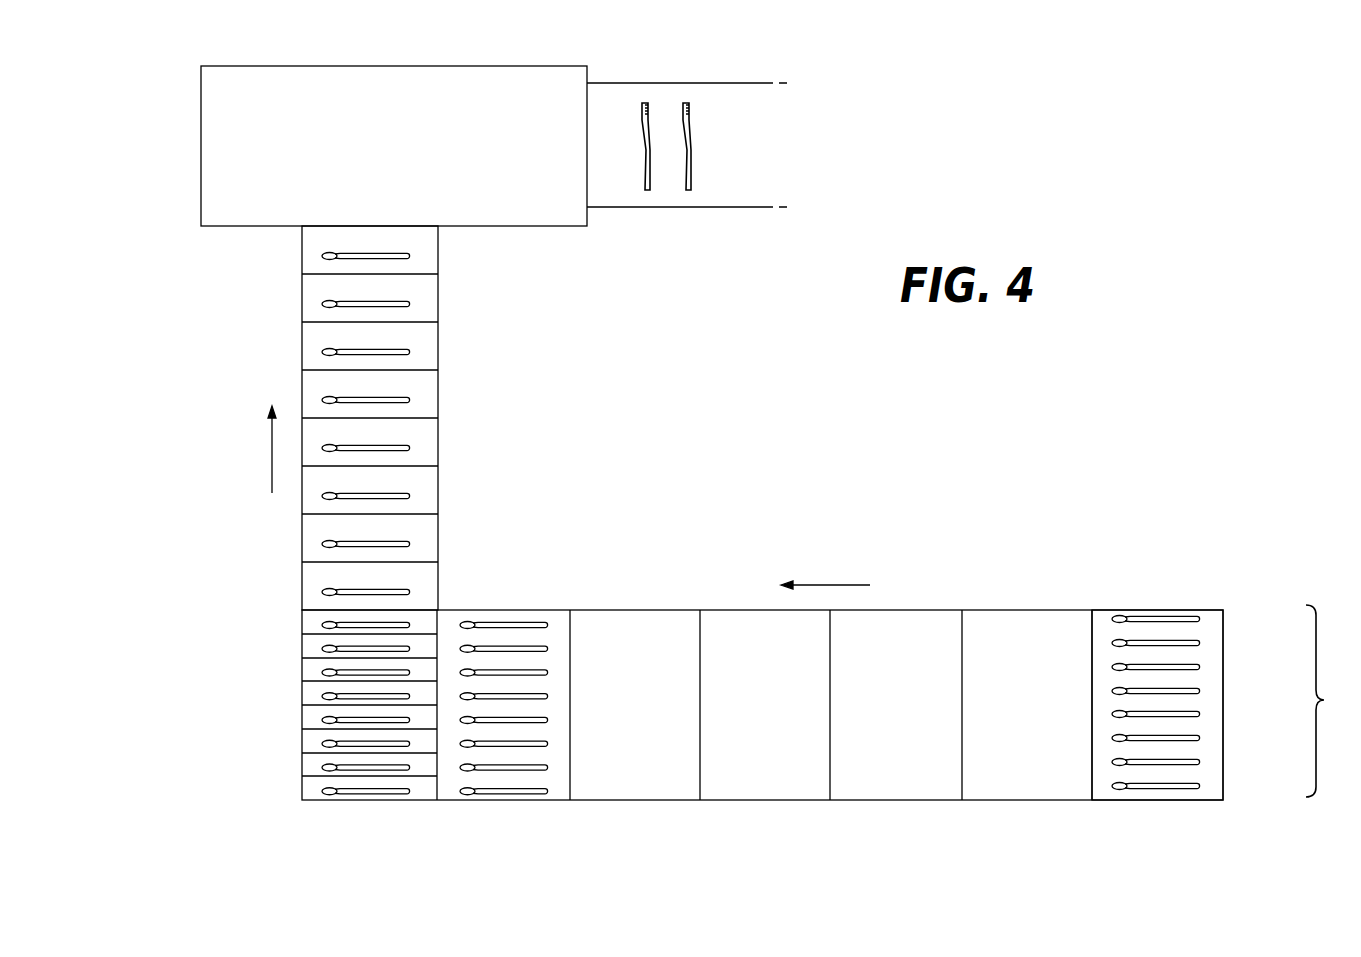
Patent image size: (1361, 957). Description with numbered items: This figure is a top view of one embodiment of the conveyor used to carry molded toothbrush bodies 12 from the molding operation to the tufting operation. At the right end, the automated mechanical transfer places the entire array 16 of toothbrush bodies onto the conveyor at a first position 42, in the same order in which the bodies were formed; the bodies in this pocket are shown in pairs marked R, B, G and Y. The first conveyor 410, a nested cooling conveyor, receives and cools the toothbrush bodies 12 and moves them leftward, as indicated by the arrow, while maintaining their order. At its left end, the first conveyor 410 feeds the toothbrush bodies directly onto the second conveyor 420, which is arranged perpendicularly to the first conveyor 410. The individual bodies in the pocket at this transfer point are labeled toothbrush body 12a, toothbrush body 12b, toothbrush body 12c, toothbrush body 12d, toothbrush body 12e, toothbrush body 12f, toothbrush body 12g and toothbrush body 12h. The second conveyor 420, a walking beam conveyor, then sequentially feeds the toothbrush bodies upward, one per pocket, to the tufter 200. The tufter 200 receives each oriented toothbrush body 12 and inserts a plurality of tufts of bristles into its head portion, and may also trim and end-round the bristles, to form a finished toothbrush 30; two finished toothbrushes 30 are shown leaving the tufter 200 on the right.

The tufter 200 is at (494, 209).
The finished toothbrush 30 is at (648, 190).
The second conveyor 420 is at (438, 447).
The first conveyor 410 is at (622, 801).
The toothbrush body 12h is at (322, 625).
The toothbrush body 12g is at (322, 648).
The toothbrush body 12f is at (322, 672).
The toothbrush body 12e is at (322, 696).
The toothbrush body 12d is at (322, 720).
The toothbrush body 12c is at (322, 743).
The toothbrush body 12b is at (322, 767).
The toothbrush body 12a is at (326, 791).
The toothbrush body 12 is at (1115, 618).
The first position 42 is at (1181, 696).
The array of toothbrush bodies 16 is at (1331, 701).
The red toothbrushes R is at (1203, 619).
The blue toothbrushes B is at (1203, 667).
The green toothbrushes G is at (1203, 714).
The yellow toothbrushes Y is at (1203, 762).